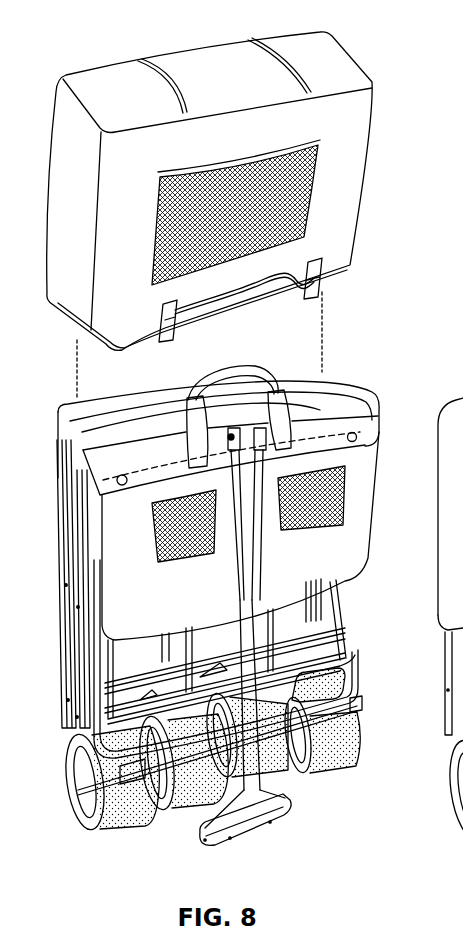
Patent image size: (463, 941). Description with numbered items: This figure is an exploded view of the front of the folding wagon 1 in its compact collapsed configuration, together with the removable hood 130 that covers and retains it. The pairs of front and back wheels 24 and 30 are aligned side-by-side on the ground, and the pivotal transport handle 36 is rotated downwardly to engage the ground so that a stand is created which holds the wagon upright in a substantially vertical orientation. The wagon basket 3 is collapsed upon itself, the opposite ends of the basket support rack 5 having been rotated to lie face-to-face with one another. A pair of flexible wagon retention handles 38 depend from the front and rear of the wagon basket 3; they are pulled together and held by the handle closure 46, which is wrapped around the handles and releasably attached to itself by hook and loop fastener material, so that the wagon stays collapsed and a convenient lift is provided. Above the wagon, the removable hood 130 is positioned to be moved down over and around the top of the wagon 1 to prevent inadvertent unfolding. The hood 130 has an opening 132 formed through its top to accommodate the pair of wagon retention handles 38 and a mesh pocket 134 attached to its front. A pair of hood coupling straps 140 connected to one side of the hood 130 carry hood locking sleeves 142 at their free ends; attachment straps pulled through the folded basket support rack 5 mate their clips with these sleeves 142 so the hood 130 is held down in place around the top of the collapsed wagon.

The folding wagon 1 is at (57, 630).
The wagon basket 3 is at (378, 482).
The basket support rack 5 is at (300, 660).
The front wheels 24 is at (187, 810).
The back wheels 30 is at (127, 832).
The pivotal transport handle 36 is at (247, 840).
The wagon retention handles 38 is at (187, 400).
The handle closure 46 is at (248, 370).
The removable hood 130 is at (382, 115).
The opening 132 is at (202, 60).
The mesh pocket 134 is at (318, 183).
The hood coupling straps 140 is at (350, 262).
The hood locking sleeves 142 is at (312, 298).